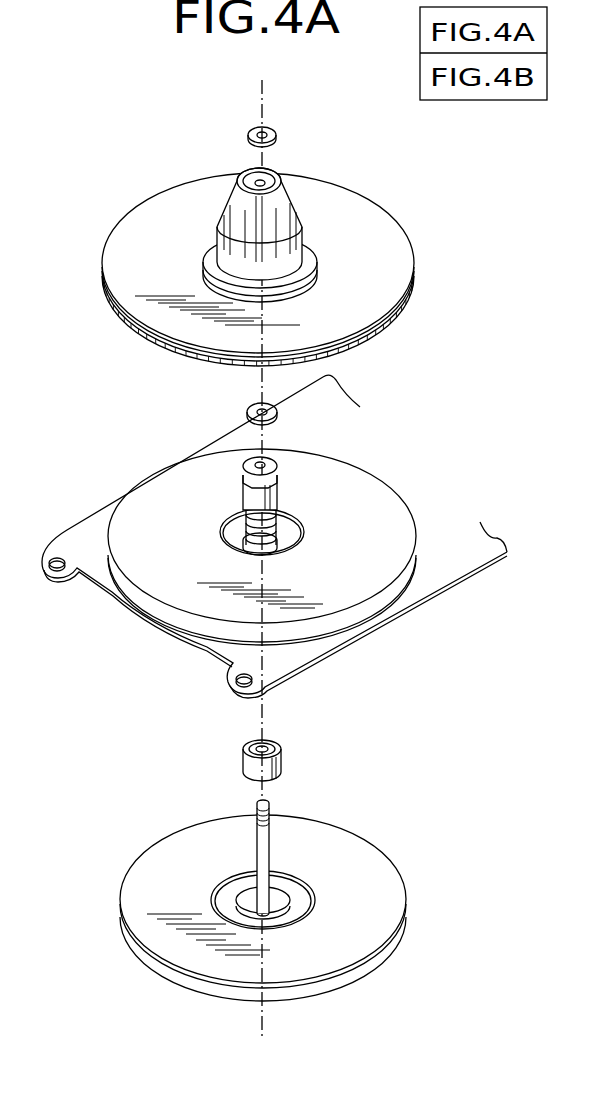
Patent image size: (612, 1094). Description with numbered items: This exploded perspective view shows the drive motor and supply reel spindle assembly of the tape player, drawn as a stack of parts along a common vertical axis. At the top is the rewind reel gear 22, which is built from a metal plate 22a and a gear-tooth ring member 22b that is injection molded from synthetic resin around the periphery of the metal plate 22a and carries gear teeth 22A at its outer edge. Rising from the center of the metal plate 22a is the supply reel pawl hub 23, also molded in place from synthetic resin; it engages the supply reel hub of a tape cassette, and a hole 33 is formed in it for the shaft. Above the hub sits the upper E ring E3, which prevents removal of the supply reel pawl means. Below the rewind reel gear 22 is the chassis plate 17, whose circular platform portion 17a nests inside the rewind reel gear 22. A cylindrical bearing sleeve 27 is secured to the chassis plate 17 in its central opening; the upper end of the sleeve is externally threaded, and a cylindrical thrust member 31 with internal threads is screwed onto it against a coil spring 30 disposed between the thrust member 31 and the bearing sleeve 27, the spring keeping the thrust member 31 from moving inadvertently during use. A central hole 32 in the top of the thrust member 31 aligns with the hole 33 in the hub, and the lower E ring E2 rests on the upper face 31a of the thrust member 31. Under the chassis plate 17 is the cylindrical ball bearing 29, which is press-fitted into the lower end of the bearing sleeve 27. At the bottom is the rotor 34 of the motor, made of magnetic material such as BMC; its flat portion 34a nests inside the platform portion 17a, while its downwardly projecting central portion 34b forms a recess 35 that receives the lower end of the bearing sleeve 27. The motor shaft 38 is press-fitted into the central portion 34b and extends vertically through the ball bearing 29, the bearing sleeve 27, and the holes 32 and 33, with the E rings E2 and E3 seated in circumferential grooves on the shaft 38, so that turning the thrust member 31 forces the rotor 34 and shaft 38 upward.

The upper "E" ring E3 is at (276, 137).
The hole 33 is at (243, 170).
The supply reel pawl hub 23 is at (270, 217).
The rewind reel gear 22 is at (265, 269).
The metal plate 22a is at (127, 245).
The gear-tooth ring member 22b is at (410, 290).
The gear teeth 22A is at (121, 326).
The lower "E" ring E2 is at (247, 407).
The central hole 32 is at (250, 458).
The upper face 31a is at (254, 451).
The cylindrical thrust member 31 is at (257, 485).
The cylindrical bearing sleeve 27 is at (240, 530).
The coil spring 30 is at (285, 532).
The circular platform portion 17a is at (266, 542).
The chassis plate 17 is at (445, 575).
The cylindrical ball bearing 29 is at (250, 768).
The motor shaft 38 is at (268, 853).
The recess 35 is at (245, 893).
The rotor 34 is at (259, 900).
The flat portion 34a is at (140, 880).
The central portion 34b is at (300, 902).